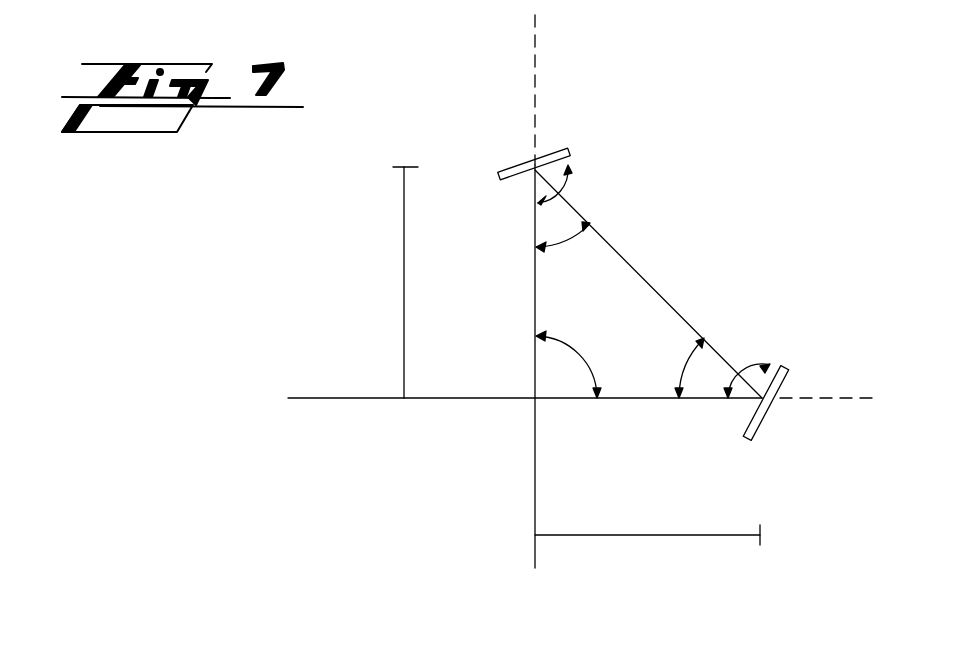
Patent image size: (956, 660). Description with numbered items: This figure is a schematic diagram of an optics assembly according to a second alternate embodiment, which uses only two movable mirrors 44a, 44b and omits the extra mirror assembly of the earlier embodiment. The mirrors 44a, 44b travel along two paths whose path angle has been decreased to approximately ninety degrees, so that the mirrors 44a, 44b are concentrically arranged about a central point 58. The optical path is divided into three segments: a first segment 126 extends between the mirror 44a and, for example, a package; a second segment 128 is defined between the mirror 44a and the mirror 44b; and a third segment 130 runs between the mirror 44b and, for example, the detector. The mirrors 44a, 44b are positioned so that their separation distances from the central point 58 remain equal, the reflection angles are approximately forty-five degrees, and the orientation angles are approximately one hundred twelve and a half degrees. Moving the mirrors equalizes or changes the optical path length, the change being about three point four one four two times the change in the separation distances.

The mirror 44a is at (553, 153).
The mirror 44b is at (783, 377).
The central point 58 is at (533, 397).
The first segment 126 is at (533, 455).
The second segment 128 is at (638, 273).
The third segment 130 is at (632, 400).